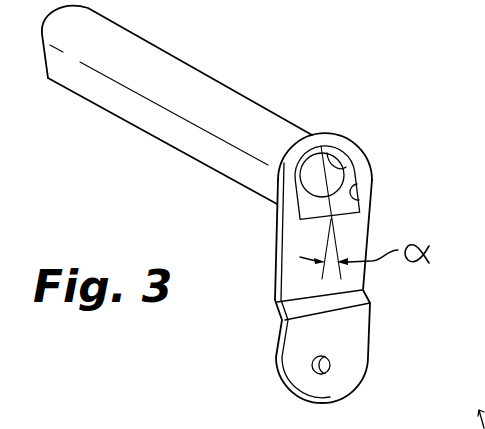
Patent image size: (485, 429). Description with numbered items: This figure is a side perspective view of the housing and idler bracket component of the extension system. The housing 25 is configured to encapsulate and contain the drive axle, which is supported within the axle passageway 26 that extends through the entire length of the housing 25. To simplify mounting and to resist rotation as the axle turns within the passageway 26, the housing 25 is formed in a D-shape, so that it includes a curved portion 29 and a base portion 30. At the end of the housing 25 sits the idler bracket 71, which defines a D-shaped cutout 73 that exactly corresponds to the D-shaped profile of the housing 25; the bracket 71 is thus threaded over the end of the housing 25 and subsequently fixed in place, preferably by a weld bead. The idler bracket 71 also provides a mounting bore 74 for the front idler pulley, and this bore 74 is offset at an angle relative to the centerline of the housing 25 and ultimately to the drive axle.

The housing 25 is at (162, 62).
The base portion 30 is at (217, 159).
The curved portion 29 is at (265, 123).
The axle passageway 26 is at (343, 162).
The D-shaped cutout 73 is at (355, 200).
The idler bracket 71 is at (278, 278).
The mounting bore 74 is at (334, 362).